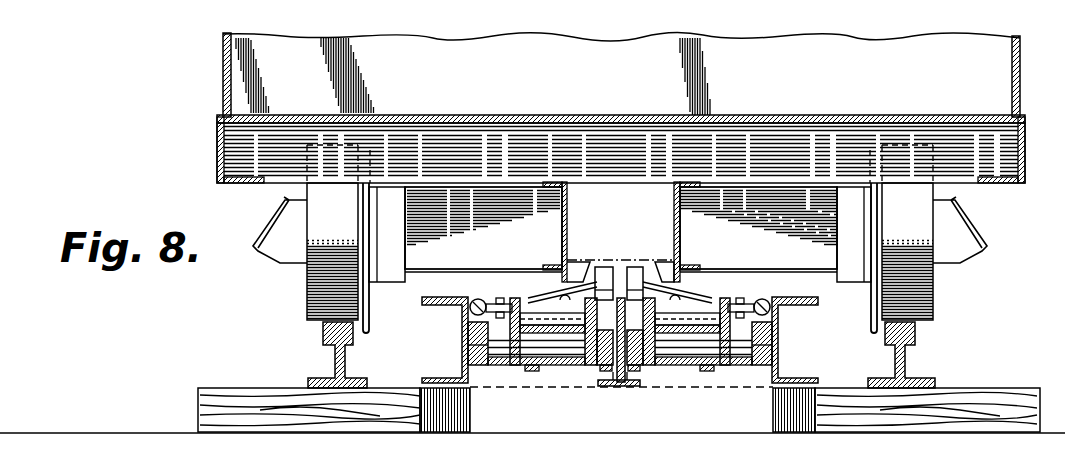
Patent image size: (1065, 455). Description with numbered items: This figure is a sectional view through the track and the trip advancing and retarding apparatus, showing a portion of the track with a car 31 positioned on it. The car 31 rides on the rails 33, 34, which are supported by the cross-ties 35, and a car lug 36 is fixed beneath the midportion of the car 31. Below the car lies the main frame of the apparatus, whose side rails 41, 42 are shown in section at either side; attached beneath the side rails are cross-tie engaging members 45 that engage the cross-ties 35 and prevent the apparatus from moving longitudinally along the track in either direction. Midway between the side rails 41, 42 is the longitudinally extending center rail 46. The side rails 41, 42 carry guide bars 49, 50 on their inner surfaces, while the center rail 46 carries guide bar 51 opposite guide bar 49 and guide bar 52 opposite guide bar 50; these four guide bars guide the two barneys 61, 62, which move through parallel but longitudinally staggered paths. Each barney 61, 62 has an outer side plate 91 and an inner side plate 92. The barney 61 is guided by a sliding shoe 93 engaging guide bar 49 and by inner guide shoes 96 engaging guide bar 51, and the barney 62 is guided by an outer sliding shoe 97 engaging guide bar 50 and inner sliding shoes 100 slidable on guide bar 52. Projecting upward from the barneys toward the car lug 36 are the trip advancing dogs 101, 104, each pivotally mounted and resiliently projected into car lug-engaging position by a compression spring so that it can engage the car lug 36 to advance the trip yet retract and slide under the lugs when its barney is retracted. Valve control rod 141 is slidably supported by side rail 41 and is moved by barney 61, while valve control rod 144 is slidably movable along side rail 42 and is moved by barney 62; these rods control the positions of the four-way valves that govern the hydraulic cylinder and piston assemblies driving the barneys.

The car 31 is at (618, 76).
The rail 33 is at (906, 362).
The rail 34 is at (333, 362).
The cross-tie 35 is at (347, 425).
The car lug 36 is at (578, 264).
The side rail 41 is at (780, 362).
The side rail 42 is at (450, 306).
The cross-tie engaging member 45 is at (472, 433).
The center rail 46 is at (620, 388).
The guide bar 49 is at (772, 338).
The guide bar 50 is at (468, 348).
The guide bar 51 is at (628, 370).
The guide bar 52 is at (600, 360).
The barney 61 is at (723, 376).
The barney 62 is at (513, 376).
The outer side plate 91 is at (514, 299).
The inner side plate 92 is at (684, 294).
The sliding shoe 93 is at (752, 386).
The inner guide shoe 96 is at (641, 368).
The outer sliding shoe 97 is at (470, 386).
The inner sliding shoe 100 is at (609, 384).
The trip advancing dog 101 is at (634, 268).
The trip advancing dog 104 is at (604, 268).
The valve control rod 141 is at (770, 300).
The valve control rod 144 is at (478, 299).